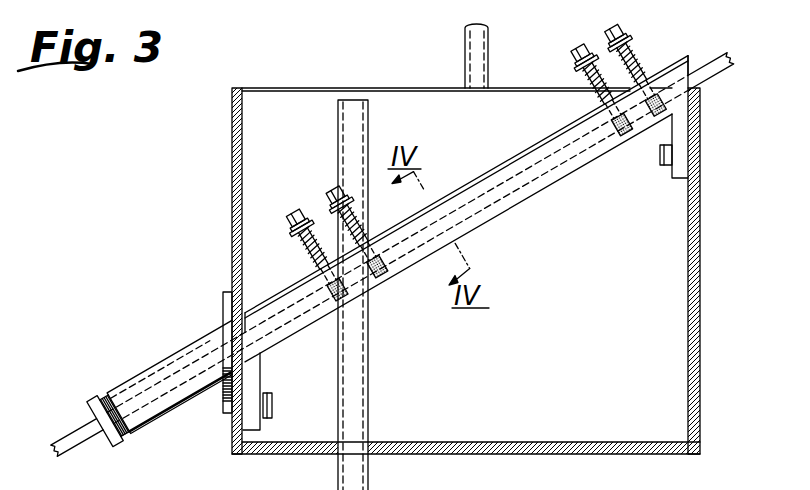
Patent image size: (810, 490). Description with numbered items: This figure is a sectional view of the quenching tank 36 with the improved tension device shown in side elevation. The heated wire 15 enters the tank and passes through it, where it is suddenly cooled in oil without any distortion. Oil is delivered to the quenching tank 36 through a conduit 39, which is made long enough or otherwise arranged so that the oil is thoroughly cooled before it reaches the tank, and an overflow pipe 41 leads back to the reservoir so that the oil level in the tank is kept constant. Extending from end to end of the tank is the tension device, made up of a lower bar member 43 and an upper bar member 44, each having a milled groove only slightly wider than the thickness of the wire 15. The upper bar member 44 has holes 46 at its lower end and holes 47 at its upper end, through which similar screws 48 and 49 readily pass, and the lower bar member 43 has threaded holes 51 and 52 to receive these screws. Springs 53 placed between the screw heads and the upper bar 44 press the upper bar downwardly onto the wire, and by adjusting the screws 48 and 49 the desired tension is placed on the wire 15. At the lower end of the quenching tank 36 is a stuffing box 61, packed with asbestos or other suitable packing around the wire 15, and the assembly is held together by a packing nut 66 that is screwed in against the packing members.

The wire 15 is at (78, 429).
The quenching tank 36 is at (232, 130).
The conduit 39 is at (470, 48).
The overflow pipe 41 is at (362, 466).
The lower bar member 43 is at (506, 208).
The upper bar member 44 is at (533, 147).
The holes 46 is at (326, 281).
The holes 47 is at (598, 107).
The screws 48 is at (313, 172).
The screws 49 is at (606, 26).
The threaded holes 51 is at (388, 273).
The threaded holes 52 is at (619, 138).
The springs 53 is at (300, 232).
The stuffing box 61 is at (173, 353).
The packing nut 66 is at (99, 393).